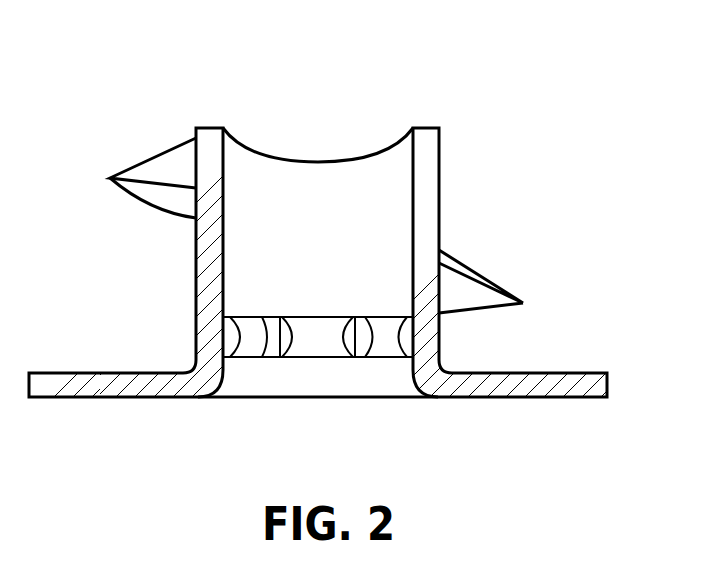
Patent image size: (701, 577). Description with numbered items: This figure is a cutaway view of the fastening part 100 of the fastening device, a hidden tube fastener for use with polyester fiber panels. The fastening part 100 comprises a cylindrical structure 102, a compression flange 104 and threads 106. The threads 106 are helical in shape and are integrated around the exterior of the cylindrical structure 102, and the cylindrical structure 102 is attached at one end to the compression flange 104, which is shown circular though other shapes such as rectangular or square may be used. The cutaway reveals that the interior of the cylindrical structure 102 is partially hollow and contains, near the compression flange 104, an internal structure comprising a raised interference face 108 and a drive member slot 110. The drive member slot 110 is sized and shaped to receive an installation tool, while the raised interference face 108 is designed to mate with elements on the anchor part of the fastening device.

The fastening part 100 is at (140, 71).
The cylindrical structure 102 is at (439, 182).
The compression flange 104 is at (577, 373).
The threads 106 is at (490, 277).
The raised interference face 108 is at (383, 343).
The drive member slot 110 is at (273, 350).